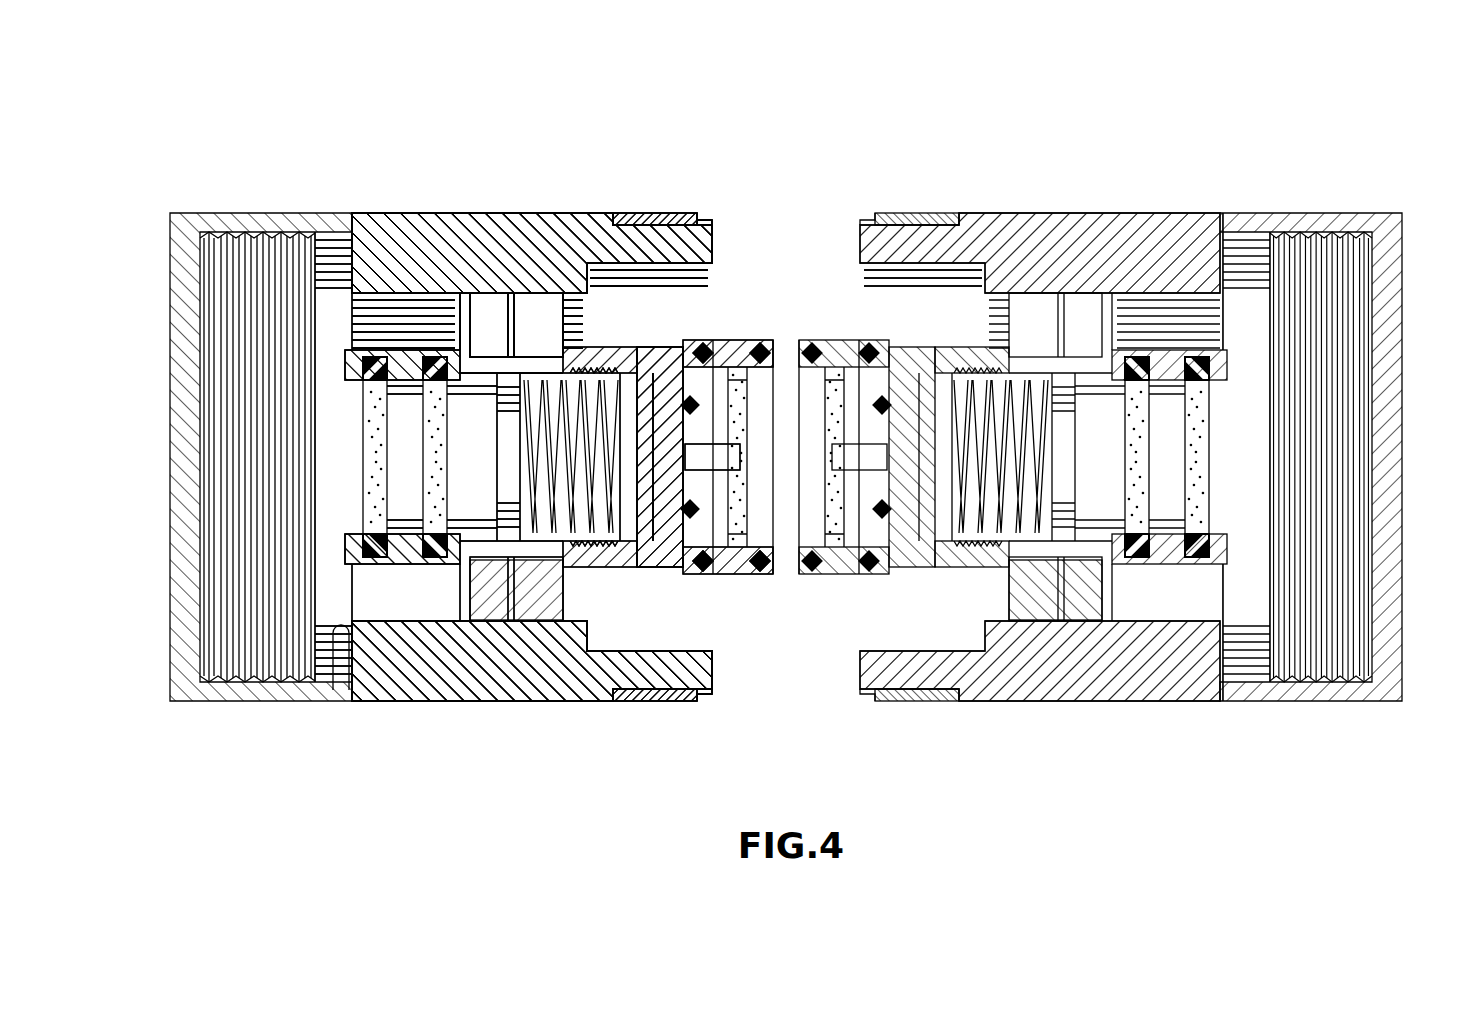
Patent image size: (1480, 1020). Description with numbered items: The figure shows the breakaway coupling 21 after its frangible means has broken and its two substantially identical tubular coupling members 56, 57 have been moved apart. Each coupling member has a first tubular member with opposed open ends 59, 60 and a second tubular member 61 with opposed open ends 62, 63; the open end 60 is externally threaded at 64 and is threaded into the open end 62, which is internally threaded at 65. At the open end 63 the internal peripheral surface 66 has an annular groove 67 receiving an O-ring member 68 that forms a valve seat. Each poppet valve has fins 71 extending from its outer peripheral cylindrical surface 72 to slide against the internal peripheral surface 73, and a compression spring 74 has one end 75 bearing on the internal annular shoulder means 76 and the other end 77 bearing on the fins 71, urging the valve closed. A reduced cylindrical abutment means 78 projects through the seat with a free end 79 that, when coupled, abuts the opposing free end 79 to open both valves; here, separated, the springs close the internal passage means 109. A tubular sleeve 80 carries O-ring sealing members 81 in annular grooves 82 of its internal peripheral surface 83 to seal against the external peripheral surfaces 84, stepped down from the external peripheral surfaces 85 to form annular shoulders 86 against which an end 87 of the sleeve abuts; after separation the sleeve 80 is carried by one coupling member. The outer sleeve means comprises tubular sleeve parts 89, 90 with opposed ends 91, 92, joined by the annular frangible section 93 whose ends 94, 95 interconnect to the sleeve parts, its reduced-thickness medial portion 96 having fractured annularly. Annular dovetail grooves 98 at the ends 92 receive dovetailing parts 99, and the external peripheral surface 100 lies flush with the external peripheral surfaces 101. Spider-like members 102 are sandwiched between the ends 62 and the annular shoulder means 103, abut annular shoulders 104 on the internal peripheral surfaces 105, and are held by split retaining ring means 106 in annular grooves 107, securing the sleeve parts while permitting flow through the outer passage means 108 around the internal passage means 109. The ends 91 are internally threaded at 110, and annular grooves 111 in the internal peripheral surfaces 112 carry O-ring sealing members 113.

The breakaway coupling 21 is at (1347, 163).
The tubular coupling member 56 is at (378, 350).
The tubular coupling member 57 is at (1175, 330).
The open end of first tubular member 59 is at (343, 350).
The open end of first tubular member 60 is at (617, 542).
The second tubular member 61 is at (640, 352).
The open end of second tubular member 62 is at (511, 333).
The open end of second tubular member 63 is at (725, 345).
The external threads 64 is at (1010, 665).
The internal threads 65 is at (567, 537).
The internal peripheral surface 66 is at (700, 508).
The annular groove 67 is at (762, 352).
The O-ring member 68 is at (752, 425).
The fins 71 is at (615, 468).
The outer peripheral cylindrical surface 72 is at (637, 540).
The internal peripheral surface 73 is at (520, 413).
The compression spring 74 is at (520, 451).
The spring end 75 is at (498, 330).
The internal annular shoulder means 76 is at (506, 340).
The spring end 77 is at (632, 560).
The reduced cylindrical abutment means 78 is at (742, 468).
The free end of abutment means 79 is at (742, 457).
The tubular sleeve 80 is at (770, 348).
The O-ring sealing members 81 is at (776, 546).
The annular grooves 82 is at (720, 590).
The internal peripheral surface of sleeve 83 is at (768, 572).
The external peripheral surface 84 is at (656, 345).
The external peripheral surface 85 is at (592, 352).
The annular shoulder 86 is at (630, 350).
The end of sleeve 87 is at (655, 223).
The tubular sleeve part 89 is at (495, 690).
The tubular sleeve part 90 is at (1170, 700).
The end of sleeve part 91 is at (170, 695).
The end of sleeve part 92 is at (718, 680).
The annular frangible section 93 is at (903, 705).
The end of frangible sleeve 94 is at (624, 702).
The end of frangible sleeve 95 is at (955, 700).
The medial portion 96 is at (708, 702).
The annular dovetail grooves 98 is at (572, 672).
The dovetailing parts 99 is at (645, 702).
The external peripheral surface of frangible sleeve 100 is at (876, 214).
The external peripheral surfaces of sleeve parts 101 is at (425, 292).
The spider-like members 102 is at (520, 300).
The annular shoulder means 103 is at (460, 560).
The annular shoulders 104 is at (480, 672).
The internal peripheral surfaces 105 is at (343, 690).
The split retaining ring means 106 is at (455, 672).
The annular grooves 107 is at (463, 612).
The outer passage means 108 is at (1215, 318).
The internal passage means 109 is at (1222, 460).
The internal threads 110 is at (262, 672).
The annular grooves 111 is at (385, 332).
The internal peripheral surfaces 112 is at (432, 538).
The O-ring sealing members 113 is at (372, 533).